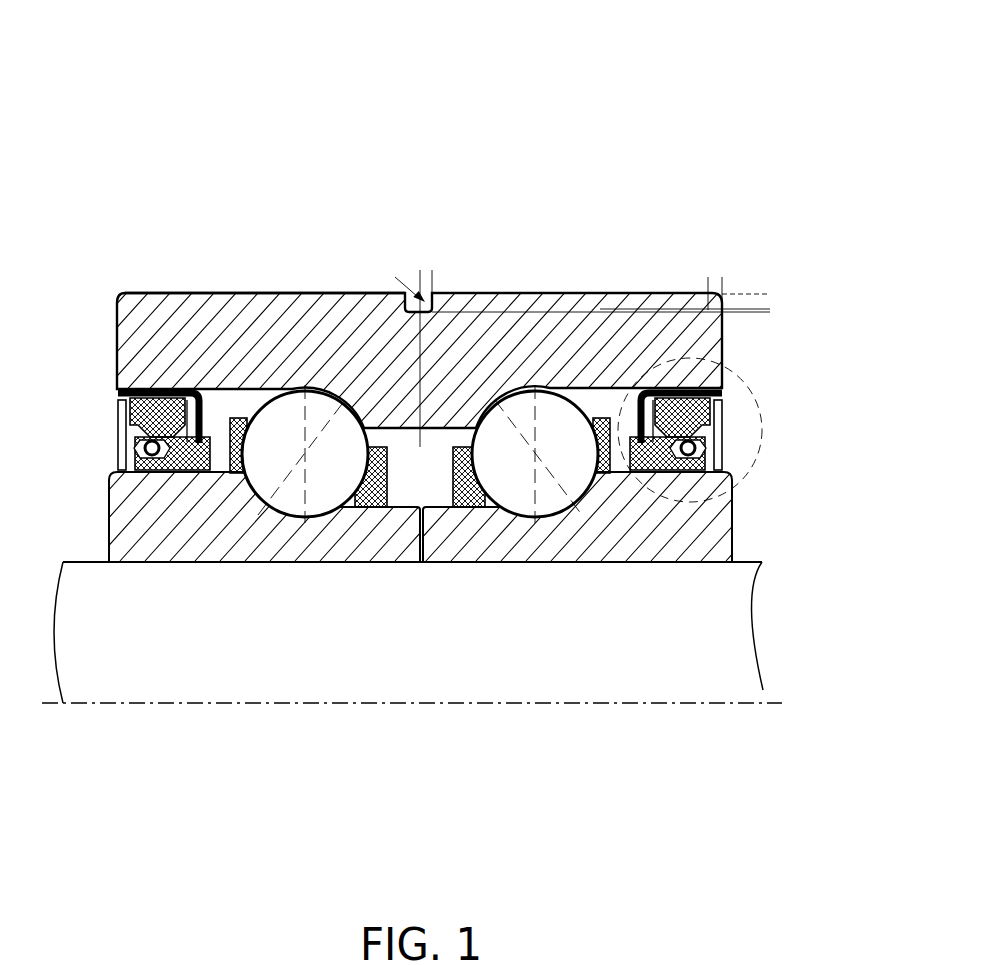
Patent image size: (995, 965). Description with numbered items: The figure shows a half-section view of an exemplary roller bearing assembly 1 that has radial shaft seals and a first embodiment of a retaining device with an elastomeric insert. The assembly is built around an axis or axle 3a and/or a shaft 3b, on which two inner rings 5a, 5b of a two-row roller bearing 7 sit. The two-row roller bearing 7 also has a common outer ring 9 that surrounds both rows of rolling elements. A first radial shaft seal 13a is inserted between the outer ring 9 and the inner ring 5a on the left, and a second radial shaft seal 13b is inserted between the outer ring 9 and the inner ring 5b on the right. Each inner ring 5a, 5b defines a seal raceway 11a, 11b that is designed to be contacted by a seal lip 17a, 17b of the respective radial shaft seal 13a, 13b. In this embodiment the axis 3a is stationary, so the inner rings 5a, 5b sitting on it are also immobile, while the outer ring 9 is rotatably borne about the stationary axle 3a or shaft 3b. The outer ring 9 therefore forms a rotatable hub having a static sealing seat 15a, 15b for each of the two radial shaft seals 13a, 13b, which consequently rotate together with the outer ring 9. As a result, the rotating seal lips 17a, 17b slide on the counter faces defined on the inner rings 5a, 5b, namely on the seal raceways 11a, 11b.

The bearing assembly 1 is at (571, 128).
The axis 3a is at (658, 680).
The shaft 3b is at (757, 626).
The inner ring 5a is at (120, 531).
The inner ring 5b is at (732, 527).
The two-row roller bearing 7 is at (312, 283).
The outer ring 9 is at (458, 352).
The seal raceway 11a is at (216, 470).
The seal raceway 11b is at (620, 470).
The radial shaft seal 13a is at (120, 414).
The radial shaft seal 13b is at (730, 414).
The static sealing seat 15a is at (152, 388).
The static sealing seat 15b is at (690, 388).
The seal lip 17a is at (115, 472).
The seal lip 17b is at (725, 472).